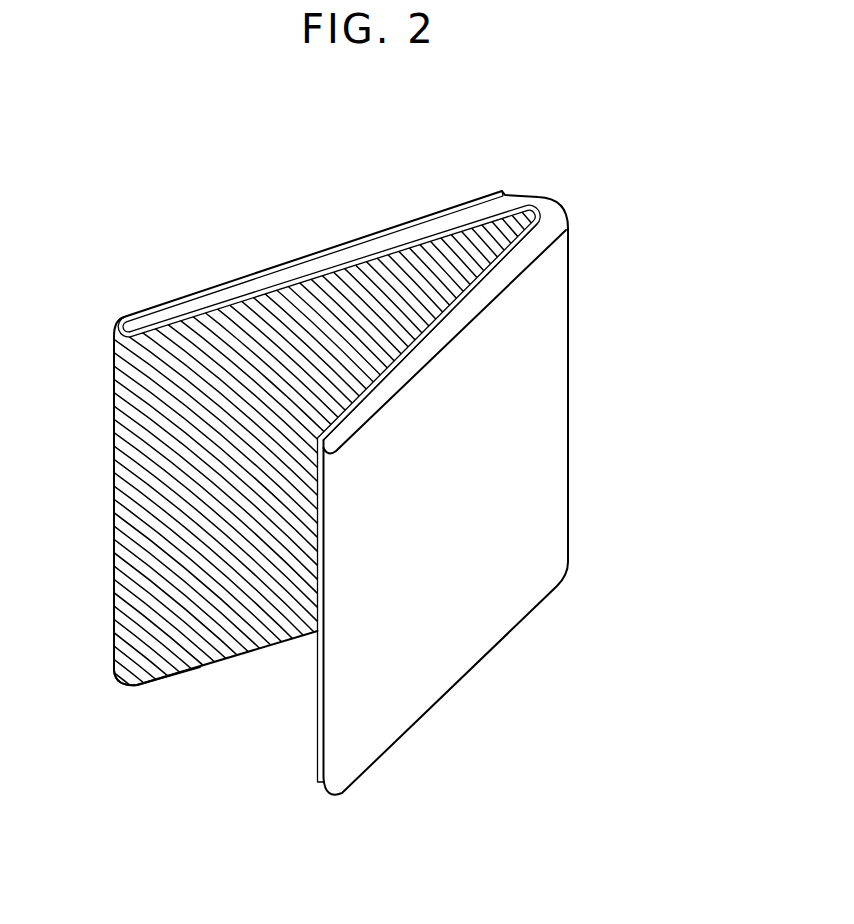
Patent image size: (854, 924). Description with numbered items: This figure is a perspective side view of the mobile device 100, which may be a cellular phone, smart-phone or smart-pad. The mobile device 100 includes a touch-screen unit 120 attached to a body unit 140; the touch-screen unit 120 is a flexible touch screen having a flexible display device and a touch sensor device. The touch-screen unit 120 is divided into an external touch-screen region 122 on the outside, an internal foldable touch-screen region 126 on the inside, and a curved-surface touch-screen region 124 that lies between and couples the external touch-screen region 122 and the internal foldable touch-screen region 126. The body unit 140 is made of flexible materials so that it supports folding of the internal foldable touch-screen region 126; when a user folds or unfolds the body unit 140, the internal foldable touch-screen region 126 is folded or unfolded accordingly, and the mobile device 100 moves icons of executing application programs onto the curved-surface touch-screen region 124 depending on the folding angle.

The mobile device 100 is at (370, 116).
The touch-screen unit 120 is at (318, 721).
The external touch-screen region 122 is at (190, 292).
The curved-surface touch-screen region 124 is at (126, 664).
The internal foldable touch-screen region 126 is at (309, 305).
The body unit 140 is at (343, 437).